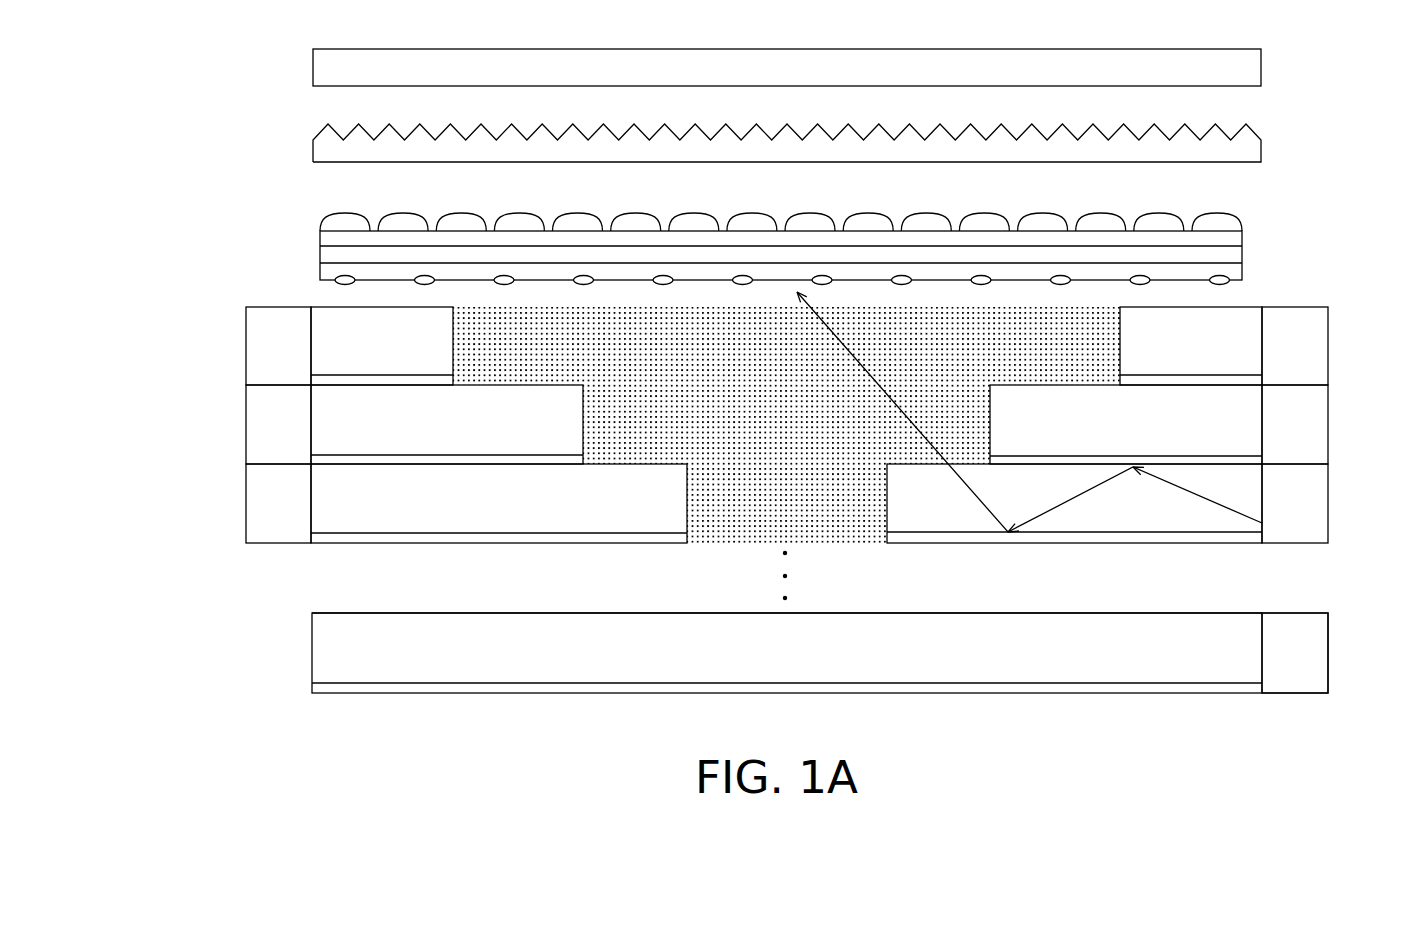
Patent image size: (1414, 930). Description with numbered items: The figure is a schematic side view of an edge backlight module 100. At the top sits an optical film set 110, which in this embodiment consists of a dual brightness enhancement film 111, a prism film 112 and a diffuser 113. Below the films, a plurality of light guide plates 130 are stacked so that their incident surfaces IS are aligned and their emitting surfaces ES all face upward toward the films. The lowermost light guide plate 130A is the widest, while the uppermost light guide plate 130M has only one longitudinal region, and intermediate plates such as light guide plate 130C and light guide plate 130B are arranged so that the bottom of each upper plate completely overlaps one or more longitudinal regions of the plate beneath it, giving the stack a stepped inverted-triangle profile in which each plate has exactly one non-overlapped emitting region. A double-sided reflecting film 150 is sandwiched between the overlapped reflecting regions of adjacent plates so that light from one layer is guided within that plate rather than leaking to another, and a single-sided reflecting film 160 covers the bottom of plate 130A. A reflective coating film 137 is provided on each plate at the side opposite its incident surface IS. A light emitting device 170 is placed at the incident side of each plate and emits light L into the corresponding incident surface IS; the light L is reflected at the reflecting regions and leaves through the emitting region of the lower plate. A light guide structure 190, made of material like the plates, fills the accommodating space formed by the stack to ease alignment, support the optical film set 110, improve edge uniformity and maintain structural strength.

The edge backlight module 100 is at (1387, 768).
The optical film set 110 is at (854, 167).
The dual brightness enhancement film 111 is at (1245, 69).
The prism film 112 is at (1252, 148).
The diffuser 113 is at (826, 248).
The light guide plates 130 is at (142, 358).
The uppermost light guide plate 130M is at (338, 336).
The light guide plate 130C is at (775, 424).
The light guide plate 130B is at (775, 430).
The lowermost light guide plate 130A is at (772, 664).
The reflective coating film 137 is at (993, 425).
The reflecting film 150 is at (1193, 538).
The single-sided reflecting film 160 is at (312, 690).
The light emitting device 170 is at (1303, 648).
The light guide structure 190 is at (1080, 347).
The light L is at (1225, 507).
The emitting surface ES is at (858, 613).
The incident surface IS is at (1260, 645).